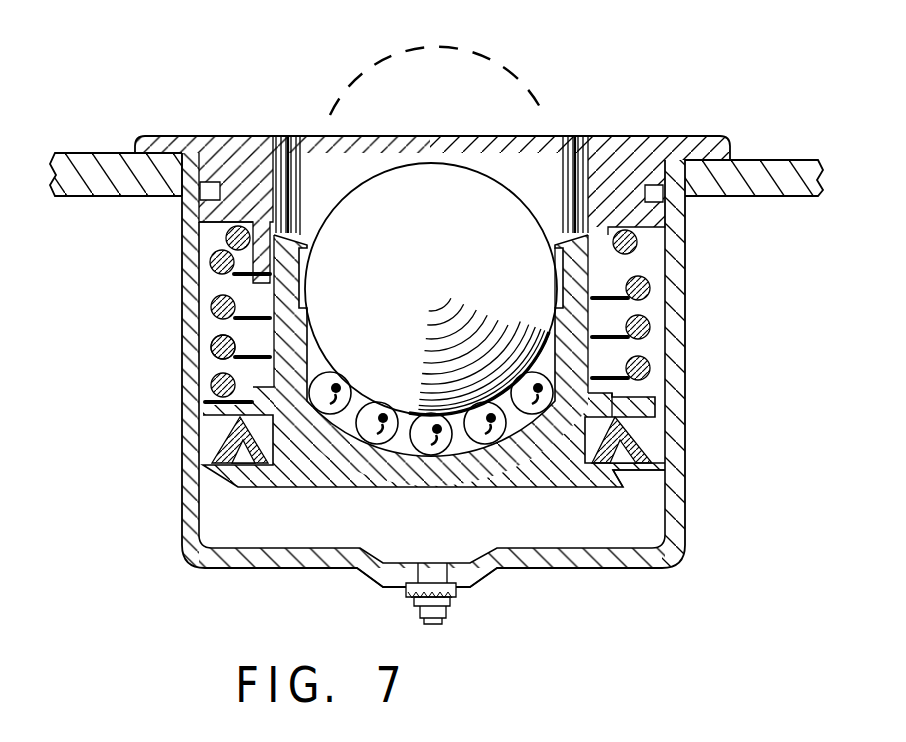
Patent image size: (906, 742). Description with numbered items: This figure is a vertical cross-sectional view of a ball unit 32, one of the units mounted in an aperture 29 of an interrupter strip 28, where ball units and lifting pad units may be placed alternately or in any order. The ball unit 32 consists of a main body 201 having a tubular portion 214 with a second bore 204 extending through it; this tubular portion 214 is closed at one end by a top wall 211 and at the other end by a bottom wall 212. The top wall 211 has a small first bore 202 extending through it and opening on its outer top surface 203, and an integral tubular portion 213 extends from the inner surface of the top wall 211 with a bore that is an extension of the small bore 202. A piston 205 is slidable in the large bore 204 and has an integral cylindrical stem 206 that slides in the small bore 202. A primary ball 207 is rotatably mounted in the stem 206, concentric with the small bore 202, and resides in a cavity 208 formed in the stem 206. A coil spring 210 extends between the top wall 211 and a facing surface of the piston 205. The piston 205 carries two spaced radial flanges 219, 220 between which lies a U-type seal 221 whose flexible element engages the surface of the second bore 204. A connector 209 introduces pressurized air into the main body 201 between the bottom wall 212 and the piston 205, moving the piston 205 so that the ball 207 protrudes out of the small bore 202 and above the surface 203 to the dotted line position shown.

The interrupter strip 28 is at (116, 142).
The aperture 29 is at (182, 184).
The ball unit 32 is at (636, 137).
The main body 201 is at (687, 320).
The small first bore 202 is at (212, 300).
The top surface 203 is at (336, 136).
The second bore 204 is at (657, 436).
The piston 205 is at (368, 473).
The cylindrical stem 206 is at (573, 280).
The primary ball 207 is at (450, 185).
The cavity 208 is at (305, 368).
The connector 209 is at (443, 615).
The coil spring 210 is at (212, 342).
The top wall 211 is at (685, 137).
The bottom wall 212 is at (582, 560).
The tubular portion 213 is at (268, 222).
The tubular portion 214 is at (673, 208).
The radial flange 219 is at (640, 403).
The radial flange 220 is at (627, 478).
The U-type seal 221 is at (215, 432).